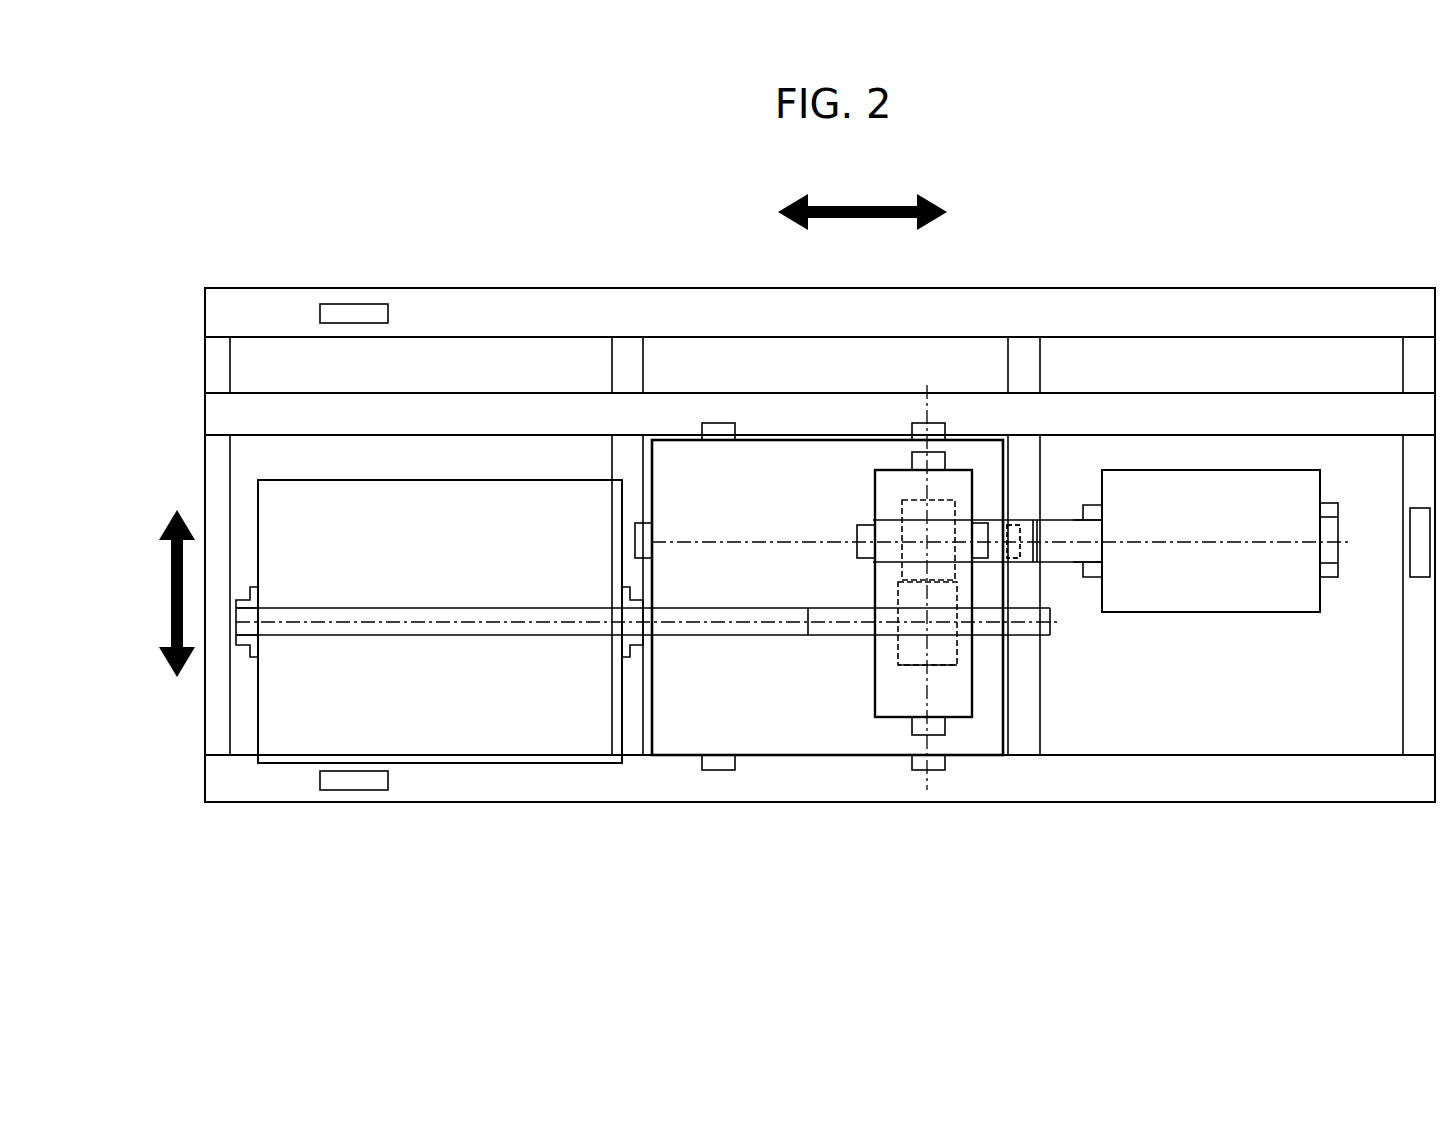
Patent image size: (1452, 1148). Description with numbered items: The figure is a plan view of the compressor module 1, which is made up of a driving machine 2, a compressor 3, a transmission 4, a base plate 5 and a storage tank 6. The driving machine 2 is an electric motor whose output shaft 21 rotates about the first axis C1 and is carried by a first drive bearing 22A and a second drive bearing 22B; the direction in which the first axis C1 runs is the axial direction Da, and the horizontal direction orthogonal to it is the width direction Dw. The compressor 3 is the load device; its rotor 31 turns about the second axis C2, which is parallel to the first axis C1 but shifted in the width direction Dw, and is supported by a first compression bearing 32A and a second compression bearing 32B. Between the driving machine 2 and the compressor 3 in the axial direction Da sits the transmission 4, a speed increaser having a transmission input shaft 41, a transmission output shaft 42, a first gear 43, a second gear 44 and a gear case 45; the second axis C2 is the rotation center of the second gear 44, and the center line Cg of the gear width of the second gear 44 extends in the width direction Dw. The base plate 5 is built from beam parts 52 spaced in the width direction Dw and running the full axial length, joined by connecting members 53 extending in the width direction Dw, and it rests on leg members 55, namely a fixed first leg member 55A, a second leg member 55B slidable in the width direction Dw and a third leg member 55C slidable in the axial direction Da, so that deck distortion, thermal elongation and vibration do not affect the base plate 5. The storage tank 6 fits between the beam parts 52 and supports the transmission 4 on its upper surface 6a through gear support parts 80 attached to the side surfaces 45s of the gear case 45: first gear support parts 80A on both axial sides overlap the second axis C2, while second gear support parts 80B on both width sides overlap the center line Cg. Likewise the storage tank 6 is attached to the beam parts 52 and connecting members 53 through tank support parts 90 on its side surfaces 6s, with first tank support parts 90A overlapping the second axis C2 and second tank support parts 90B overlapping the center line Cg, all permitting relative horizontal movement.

The compressor module 1 is at (1165, 180).
The driving machine 2 is at (505, 470).
The compressor 3 is at (1178, 455).
The transmission 4 is at (1015, 728).
The base plate 5 is at (1254, 278).
The storage tank 6 is at (800, 420).
The upper surface 6a is at (757, 445).
The side surface 6s is at (652, 733).
The output shaft 21 is at (725, 605).
The first drive bearing 22A is at (250, 660).
The second drive bearing 22B is at (635, 658).
The rotor 31 is at (1073, 520).
The first compression bearing 32A is at (1088, 578).
The second compression bearing 32B is at (1333, 580).
The transmission input shaft 41 is at (840, 605).
The transmission output shaft 42 is at (1023, 520).
The first gear 43 is at (920, 683).
The second gear 44 is at (912, 500).
The gear case 45 is at (1003, 440).
The side surface 45s is at (873, 645).
The beam part 52 is at (432, 288).
The connecting member 53 is at (612, 360).
The leg member 55 is at (859, 548).
The first leg member 55A is at (345, 790).
The second leg member 55B is at (360, 302).
The third leg member 55C is at (1405, 555).
The gear support part 80 is at (936, 540).
The first gear support part 80A is at (857, 535).
The second gear support part 80B is at (952, 470).
The tank support part 90 is at (829, 563).
The first tank support part 90A is at (636, 548).
The second tank support part 90B is at (913, 452).
The first axis C1 is at (727, 625).
The second axis C2 is at (1213, 542).
The center line Cg is at (925, 668).
The axial direction Da is at (862, 198).
The width direction Dw is at (162, 593).